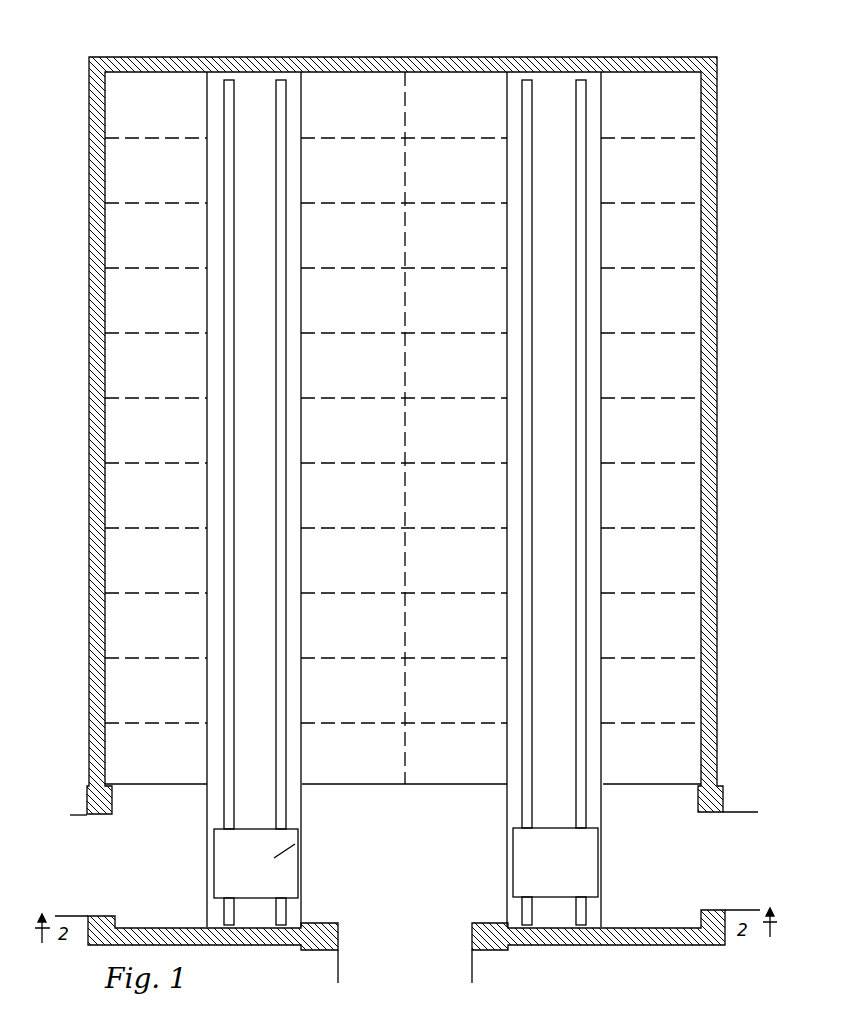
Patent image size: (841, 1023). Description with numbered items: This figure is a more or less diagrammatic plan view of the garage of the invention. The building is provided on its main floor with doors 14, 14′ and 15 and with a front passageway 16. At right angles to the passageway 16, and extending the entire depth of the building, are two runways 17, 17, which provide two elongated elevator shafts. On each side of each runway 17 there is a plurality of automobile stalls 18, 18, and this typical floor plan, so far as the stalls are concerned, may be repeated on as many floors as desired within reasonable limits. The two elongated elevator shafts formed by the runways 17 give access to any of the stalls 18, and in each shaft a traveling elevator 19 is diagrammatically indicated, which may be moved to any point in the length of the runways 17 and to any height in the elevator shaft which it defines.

The door 14 is at (376, 474).
The door 14' is at (754, 838).
The door 15 is at (404, 956).
The front passageway 16 is at (387, 470).
The runway 17 is at (247, 80).
The automobile stall 18 is at (84, 218).
The traveling elevator 19 is at (228, 864).